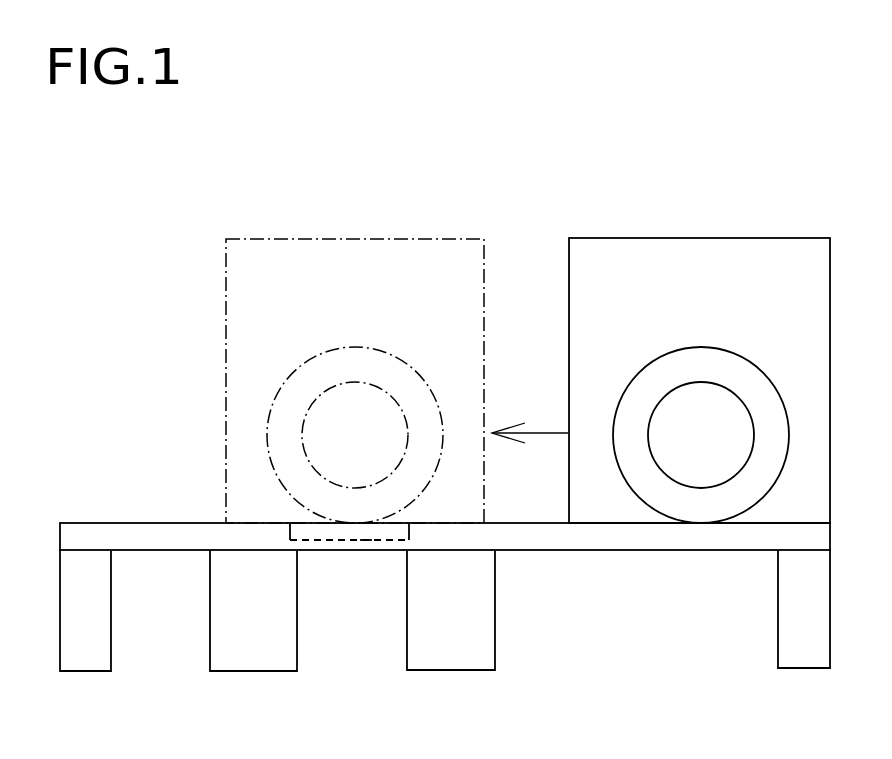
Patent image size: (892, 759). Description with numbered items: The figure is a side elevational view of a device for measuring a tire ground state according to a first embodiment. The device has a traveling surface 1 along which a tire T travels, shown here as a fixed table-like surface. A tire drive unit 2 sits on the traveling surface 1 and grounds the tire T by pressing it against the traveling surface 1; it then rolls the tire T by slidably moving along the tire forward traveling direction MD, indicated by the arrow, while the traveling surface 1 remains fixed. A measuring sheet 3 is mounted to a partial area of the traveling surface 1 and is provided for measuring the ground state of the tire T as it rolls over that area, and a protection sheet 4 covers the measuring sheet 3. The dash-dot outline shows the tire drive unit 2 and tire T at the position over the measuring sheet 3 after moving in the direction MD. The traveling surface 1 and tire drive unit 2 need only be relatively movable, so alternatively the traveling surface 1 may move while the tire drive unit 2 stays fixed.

The traveling surface 1 is at (196, 522).
The tire drive unit 2 is at (763, 236).
The measuring sheet 3 is at (335, 539).
The protection sheet 4 is at (366, 539).
The tire T is at (762, 378).
The tire forward traveling direction MD is at (530, 446).